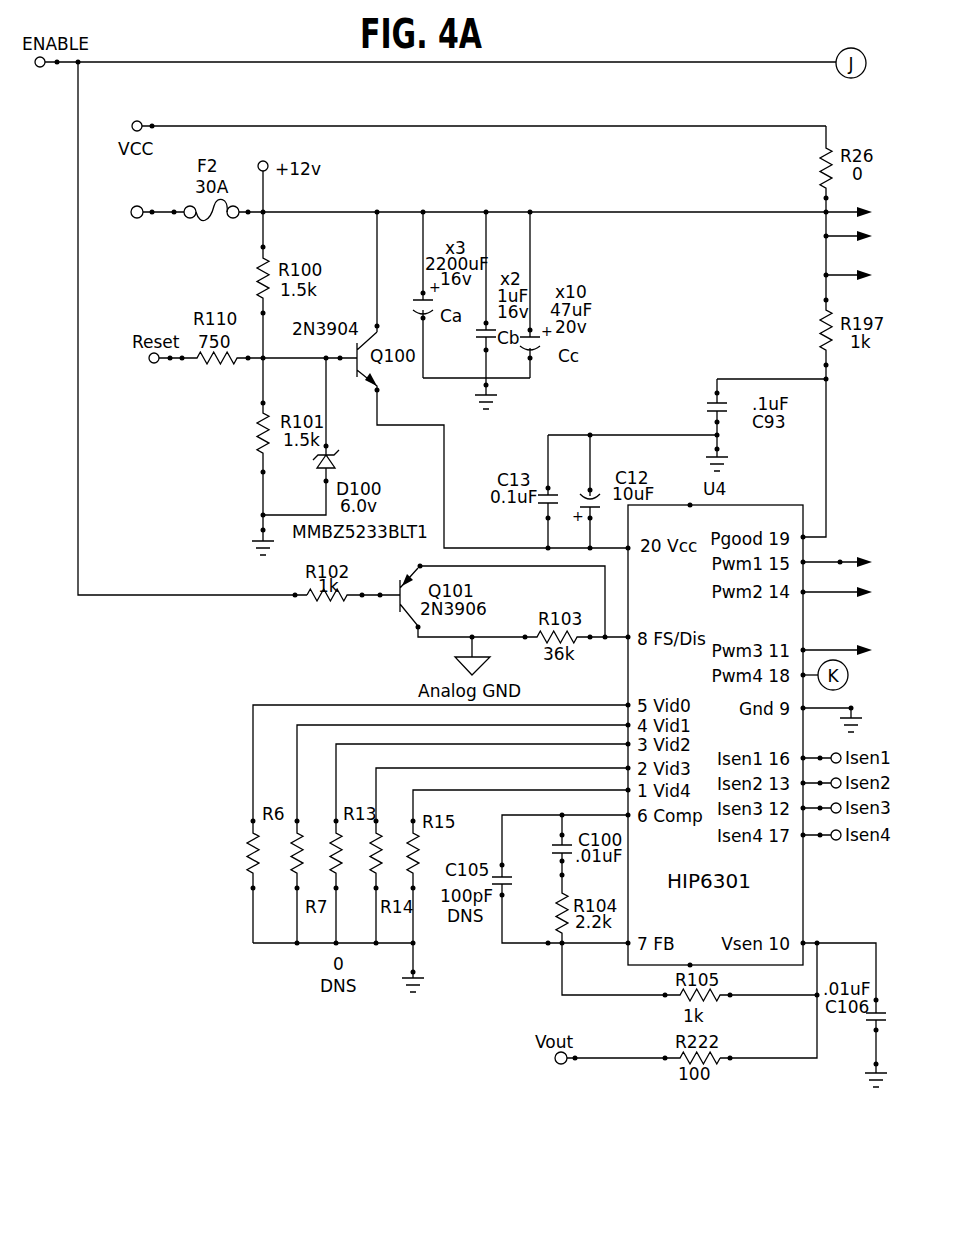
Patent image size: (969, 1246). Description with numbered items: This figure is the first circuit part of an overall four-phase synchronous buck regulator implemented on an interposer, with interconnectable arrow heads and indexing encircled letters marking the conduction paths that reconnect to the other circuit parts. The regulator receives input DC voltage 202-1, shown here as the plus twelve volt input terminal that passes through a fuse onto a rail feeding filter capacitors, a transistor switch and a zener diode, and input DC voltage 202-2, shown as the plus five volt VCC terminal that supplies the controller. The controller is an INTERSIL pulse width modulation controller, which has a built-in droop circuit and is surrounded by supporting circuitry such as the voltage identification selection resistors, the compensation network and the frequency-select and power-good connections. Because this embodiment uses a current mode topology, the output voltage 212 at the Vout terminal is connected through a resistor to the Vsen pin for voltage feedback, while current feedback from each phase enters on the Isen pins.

The input DC voltage 202-1 is at (112, 280).
The input DC voltage 202-2 is at (198, 107).
The output voltage 212 is at (555, 1058).